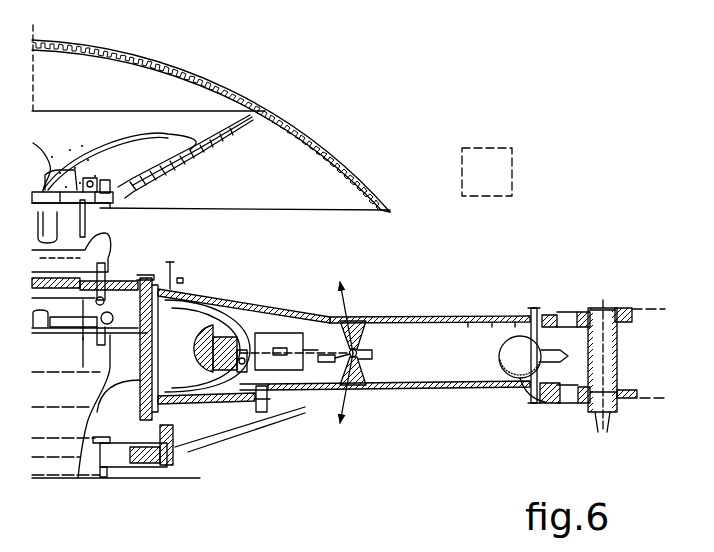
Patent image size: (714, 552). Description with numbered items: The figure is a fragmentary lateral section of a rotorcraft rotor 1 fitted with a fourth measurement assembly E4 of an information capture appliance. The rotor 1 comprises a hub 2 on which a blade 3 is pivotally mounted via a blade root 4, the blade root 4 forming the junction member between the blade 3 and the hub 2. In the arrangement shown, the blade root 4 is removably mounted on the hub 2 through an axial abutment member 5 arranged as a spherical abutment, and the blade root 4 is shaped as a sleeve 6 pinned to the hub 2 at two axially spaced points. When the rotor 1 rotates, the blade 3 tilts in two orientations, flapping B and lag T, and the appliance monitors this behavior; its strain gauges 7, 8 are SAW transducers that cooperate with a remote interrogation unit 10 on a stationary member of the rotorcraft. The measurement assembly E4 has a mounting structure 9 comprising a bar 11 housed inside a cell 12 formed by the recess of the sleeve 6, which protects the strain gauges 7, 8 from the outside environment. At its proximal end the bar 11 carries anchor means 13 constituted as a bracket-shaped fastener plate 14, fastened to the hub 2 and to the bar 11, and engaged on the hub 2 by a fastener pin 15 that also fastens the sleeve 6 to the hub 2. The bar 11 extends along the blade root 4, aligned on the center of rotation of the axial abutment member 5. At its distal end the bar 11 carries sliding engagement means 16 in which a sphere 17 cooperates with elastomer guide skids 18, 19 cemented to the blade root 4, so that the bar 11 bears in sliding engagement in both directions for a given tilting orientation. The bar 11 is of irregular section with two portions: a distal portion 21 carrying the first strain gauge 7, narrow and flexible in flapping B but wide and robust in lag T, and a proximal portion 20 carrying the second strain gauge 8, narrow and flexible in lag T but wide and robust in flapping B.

The rotorcraft rotor 1 is at (430, 130).
The hub 2 is at (127, 262).
The blade 3 is at (635, 303).
The blade root 4 is at (401, 371).
The axial abutment member 5 is at (194, 300).
The sleeve 6 is at (471, 318).
The first strain gauge 7 is at (323, 362).
The second strain gauge 8 is at (280, 347).
The mounting structure 9 is at (305, 392).
The remote interrogation unit 10 is at (487, 172).
The bar 11 is at (299, 390).
The cell 12 is at (440, 322).
The anchor means 13 is at (214, 388).
The fastener plate 14 is at (217, 380).
The fastener pin 15 is at (218, 335).
The sliding engagement means 16 is at (377, 362).
The sphere 17 is at (346, 316).
The guide skid 18 is at (372, 349).
The guide skid 19 is at (368, 384).
The proximal portion 20 is at (295, 333).
The distal portion 21 is at (321, 353).
The flapping B is at (356, 281).
The lag T is at (362, 354).
The fourth measurement assembly E4 is at (272, 400).